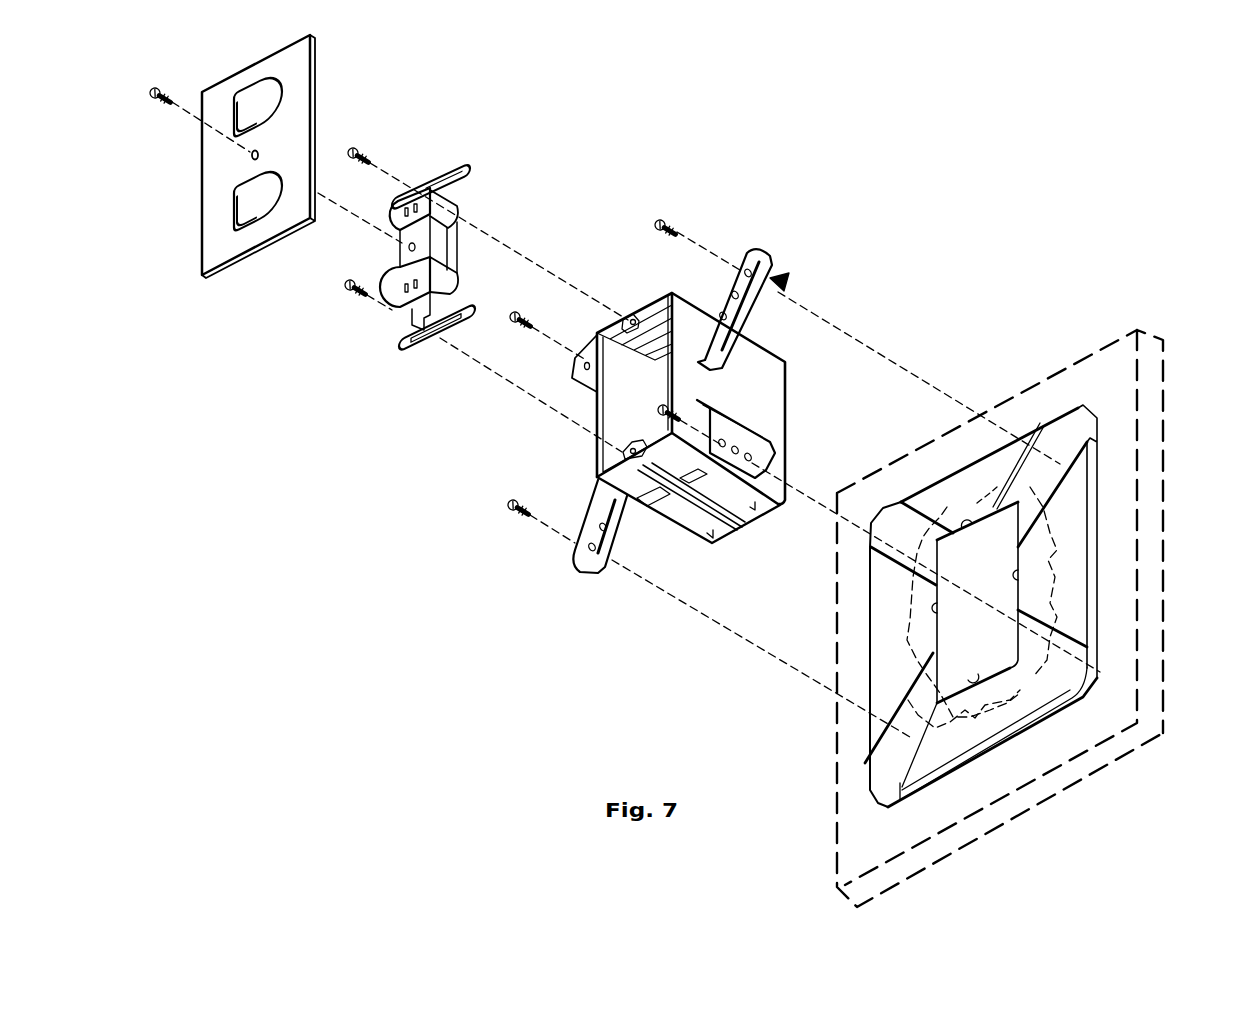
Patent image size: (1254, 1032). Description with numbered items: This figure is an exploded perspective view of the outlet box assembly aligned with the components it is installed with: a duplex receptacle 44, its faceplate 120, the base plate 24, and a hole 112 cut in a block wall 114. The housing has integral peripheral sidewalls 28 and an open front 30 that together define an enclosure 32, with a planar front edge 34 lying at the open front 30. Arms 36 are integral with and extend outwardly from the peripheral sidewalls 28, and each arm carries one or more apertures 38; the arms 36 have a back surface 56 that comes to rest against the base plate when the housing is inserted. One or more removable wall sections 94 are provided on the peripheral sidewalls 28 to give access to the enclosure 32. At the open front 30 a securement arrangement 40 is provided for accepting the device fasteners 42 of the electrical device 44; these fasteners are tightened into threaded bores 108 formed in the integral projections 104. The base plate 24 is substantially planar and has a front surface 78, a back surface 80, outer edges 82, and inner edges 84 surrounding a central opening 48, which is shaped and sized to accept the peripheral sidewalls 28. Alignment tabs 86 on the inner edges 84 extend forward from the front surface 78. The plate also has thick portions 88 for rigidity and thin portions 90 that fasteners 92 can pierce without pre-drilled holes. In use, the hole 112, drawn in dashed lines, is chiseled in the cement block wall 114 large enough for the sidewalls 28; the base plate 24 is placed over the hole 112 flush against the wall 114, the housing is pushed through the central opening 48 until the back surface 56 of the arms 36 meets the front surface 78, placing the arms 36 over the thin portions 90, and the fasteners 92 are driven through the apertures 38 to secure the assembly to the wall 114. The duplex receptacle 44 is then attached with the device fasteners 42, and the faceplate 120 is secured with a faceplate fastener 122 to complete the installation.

The faceplate 120 is at (223, 243).
The faceplate fastener 122 is at (157, 99).
The duplex receptacle 44 is at (466, 165).
The device fasteners 42 is at (352, 290).
The enclosure 32 is at (779, 440).
The open front 30 is at (620, 404).
The integral projections 104 is at (653, 337).
The securement arrangement 40 is at (631, 318).
The threaded bores 108 is at (618, 453).
The planar front edge 34 is at (597, 334).
The peripheral sidewalls 28 is at (741, 386).
The removable wall sections 94 is at (647, 513).
The arms 36 is at (836, 440).
The apertures 38 is at (758, 300).
The back surface 56 is at (786, 283).
The fasteners 92 is at (513, 512).
The wall 114 is at (845, 841).
The front surface 78 is at (967, 538).
The back surface 80 is at (1045, 538).
The base plate 24 is at (1090, 407).
The thick portions 88 is at (957, 493).
The thin portions 90 is at (1029, 487).
The inner edges 84 is at (940, 627).
The outer edges 82 is at (1097, 617).
The central opening 48 is at (1071, 602).
The alignment tabs 86 is at (1018, 576).
The hole 112 is at (1030, 727).